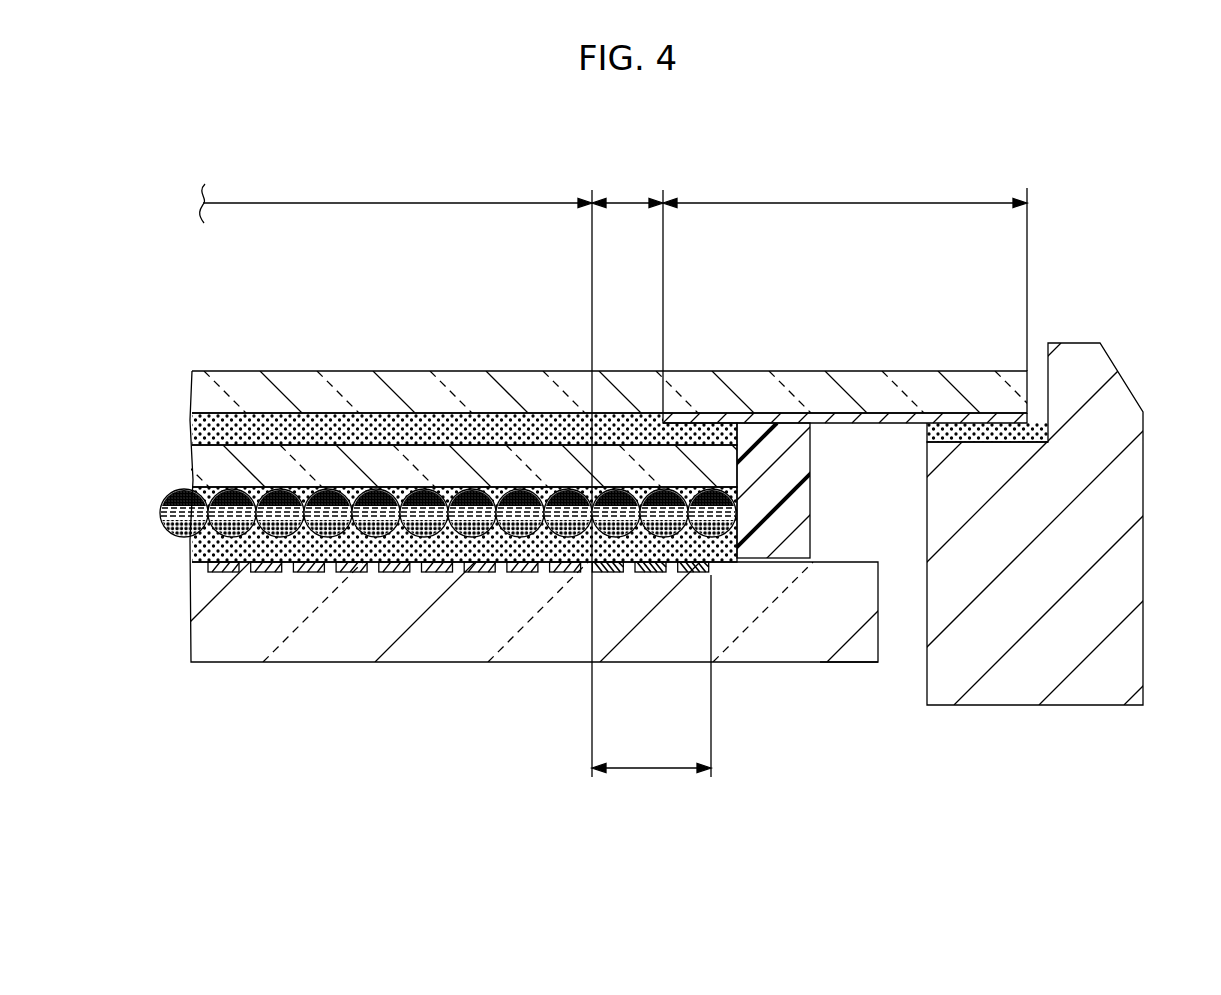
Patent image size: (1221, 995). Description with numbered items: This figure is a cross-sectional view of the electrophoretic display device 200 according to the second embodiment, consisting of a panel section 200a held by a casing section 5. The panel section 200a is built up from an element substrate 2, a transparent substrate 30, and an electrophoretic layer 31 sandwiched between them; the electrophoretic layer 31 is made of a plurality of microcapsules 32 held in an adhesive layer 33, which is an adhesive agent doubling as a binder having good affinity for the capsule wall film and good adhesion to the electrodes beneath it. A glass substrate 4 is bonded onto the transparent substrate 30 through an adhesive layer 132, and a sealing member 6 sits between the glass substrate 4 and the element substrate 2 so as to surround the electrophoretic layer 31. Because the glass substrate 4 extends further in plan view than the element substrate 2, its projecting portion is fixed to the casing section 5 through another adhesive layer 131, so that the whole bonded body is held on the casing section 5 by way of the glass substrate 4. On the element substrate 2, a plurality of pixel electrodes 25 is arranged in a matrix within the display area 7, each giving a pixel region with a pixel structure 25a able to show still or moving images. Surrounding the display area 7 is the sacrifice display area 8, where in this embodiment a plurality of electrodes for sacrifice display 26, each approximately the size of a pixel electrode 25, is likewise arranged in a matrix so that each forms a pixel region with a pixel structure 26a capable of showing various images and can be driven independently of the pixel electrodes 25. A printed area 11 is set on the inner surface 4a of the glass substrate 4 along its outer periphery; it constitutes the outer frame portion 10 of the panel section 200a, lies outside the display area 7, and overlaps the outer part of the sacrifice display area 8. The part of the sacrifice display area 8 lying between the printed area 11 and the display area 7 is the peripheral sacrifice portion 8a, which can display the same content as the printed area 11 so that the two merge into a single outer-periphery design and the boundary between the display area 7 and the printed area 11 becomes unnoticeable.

The electro-optical device 200 is at (1084, 107).
The display area 7 is at (396, 475).
The peripheral sacrifice portion 8a is at (627, 293).
The outer frame portion 10 is at (845, 272).
The glass substrate 4 is at (192, 393).
The inner surface of the glass substrate 4a is at (257, 420).
The adhesive layer 132 is at (200, 430).
The transparent substrate 30 is at (295, 468).
The electrophoretic layer 31 is at (487, 309).
The adhesive layer 33 is at (410, 543).
The microcapsules 32 is at (457, 488).
The printed area 11 is at (812, 420).
The adhesive layer 131 is at (972, 432).
The sealing member 6 is at (811, 497).
The casing section 5 is at (1135, 590).
The element substrate 2 is at (341, 645).
The pixel electrodes 25 is at (487, 574).
The pixel structure 25a is at (263, 600).
The electrode for sacrifice display 26 is at (710, 564).
The pixel structure 26a is at (648, 606).
The sacrifice display area 8 is at (651, 687).
The panel section 200a is at (862, 690).